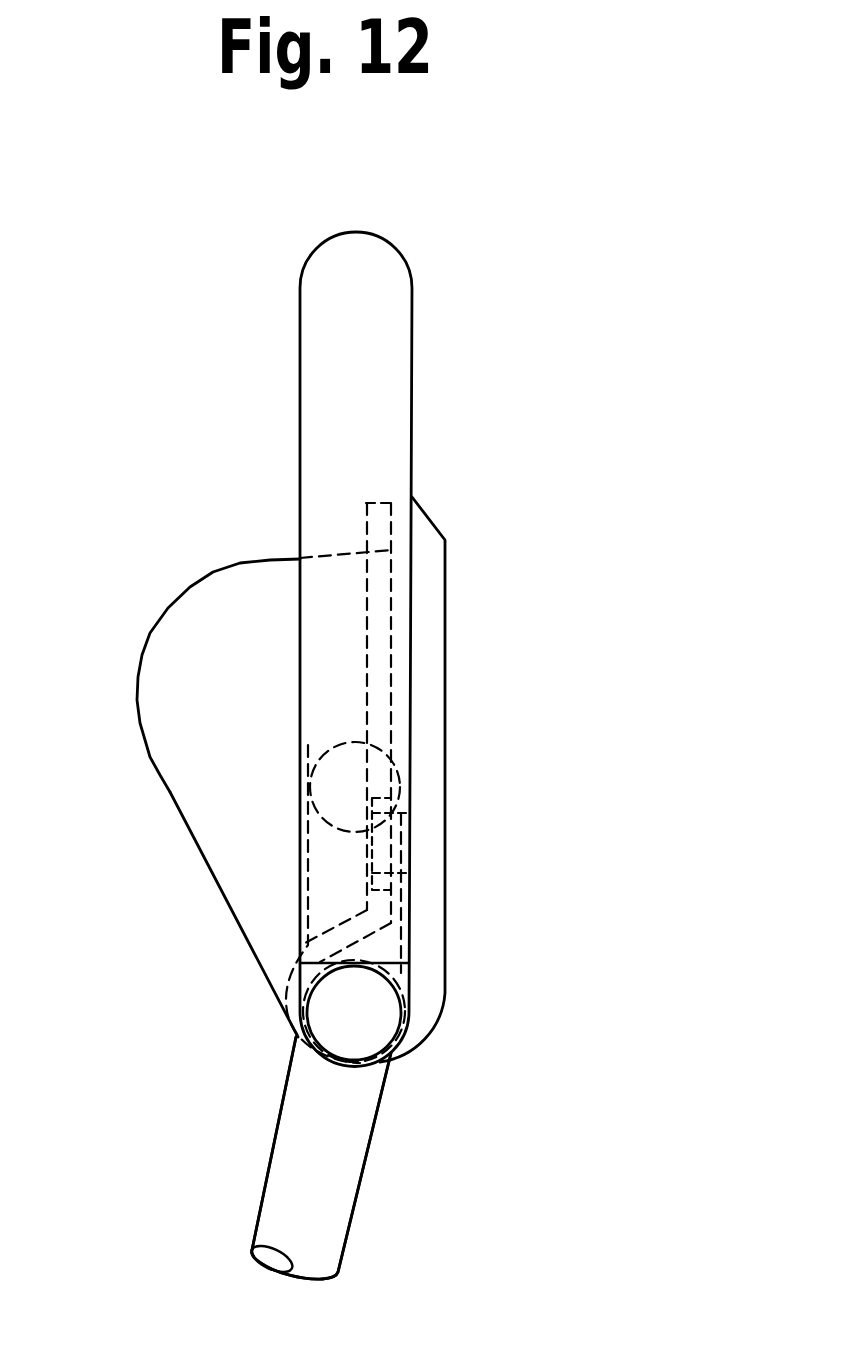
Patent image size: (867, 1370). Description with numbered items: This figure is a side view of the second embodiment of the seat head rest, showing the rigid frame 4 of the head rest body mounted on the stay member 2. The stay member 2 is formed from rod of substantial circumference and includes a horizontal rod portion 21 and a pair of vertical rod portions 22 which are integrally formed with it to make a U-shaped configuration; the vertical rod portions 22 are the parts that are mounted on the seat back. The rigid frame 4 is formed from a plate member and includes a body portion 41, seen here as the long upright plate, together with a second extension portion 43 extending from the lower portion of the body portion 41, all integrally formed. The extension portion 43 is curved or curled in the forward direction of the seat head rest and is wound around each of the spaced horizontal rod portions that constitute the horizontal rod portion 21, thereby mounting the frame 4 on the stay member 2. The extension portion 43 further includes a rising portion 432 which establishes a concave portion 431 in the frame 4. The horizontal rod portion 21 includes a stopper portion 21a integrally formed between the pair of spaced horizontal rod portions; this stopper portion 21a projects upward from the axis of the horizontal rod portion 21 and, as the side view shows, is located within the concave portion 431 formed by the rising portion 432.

The stay member 2 is at (266, 1167).
The rigid frame 4 is at (413, 276).
The horizontal rod portion 21 is at (377, 1017).
The stopper portion 21a is at (332, 798).
The vertical rod portions 22 is at (352, 1170).
The body portion 41 is at (413, 375).
The second extension portion 43 is at (383, 530).
The concave portion 431 is at (233, 605).
The rising portion 432 is at (173, 798).